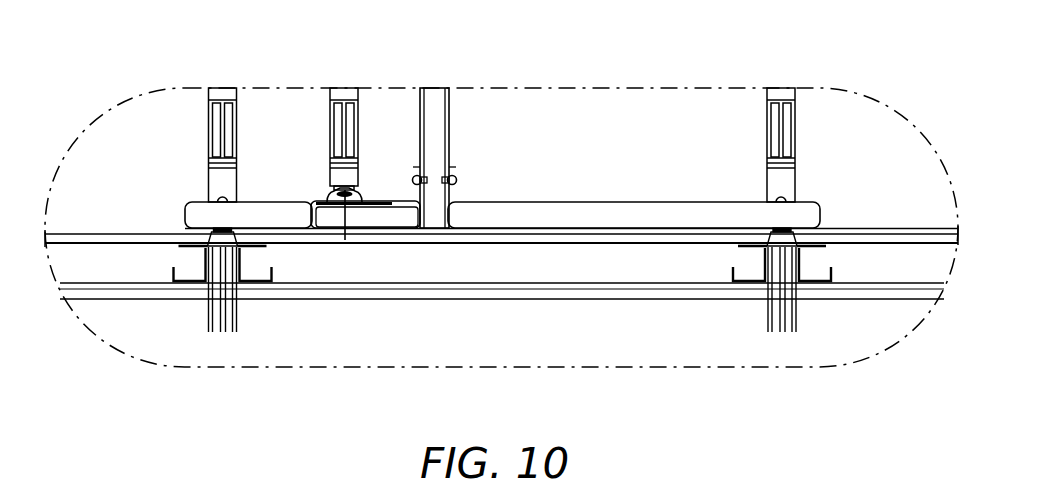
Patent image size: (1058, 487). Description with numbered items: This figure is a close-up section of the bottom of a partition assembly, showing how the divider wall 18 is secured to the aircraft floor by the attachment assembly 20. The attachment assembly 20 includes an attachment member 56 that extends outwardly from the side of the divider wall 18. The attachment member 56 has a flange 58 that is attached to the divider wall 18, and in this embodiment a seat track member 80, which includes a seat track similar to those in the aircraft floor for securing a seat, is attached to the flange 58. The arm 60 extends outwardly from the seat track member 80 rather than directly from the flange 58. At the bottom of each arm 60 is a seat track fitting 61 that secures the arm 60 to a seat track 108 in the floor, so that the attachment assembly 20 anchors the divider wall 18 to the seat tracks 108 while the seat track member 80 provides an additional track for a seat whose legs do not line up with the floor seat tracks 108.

The divider wall 18 is at (435, 112).
The attachment assembly 20 is at (463, 270).
The attachment member 56 is at (323, 221).
The flange 58 is at (420, 167).
The arm 60 is at (275, 212).
The seat track fitting 61 is at (230, 255).
The seat track member 80 is at (360, 190).
The seat track 108 is at (205, 252).